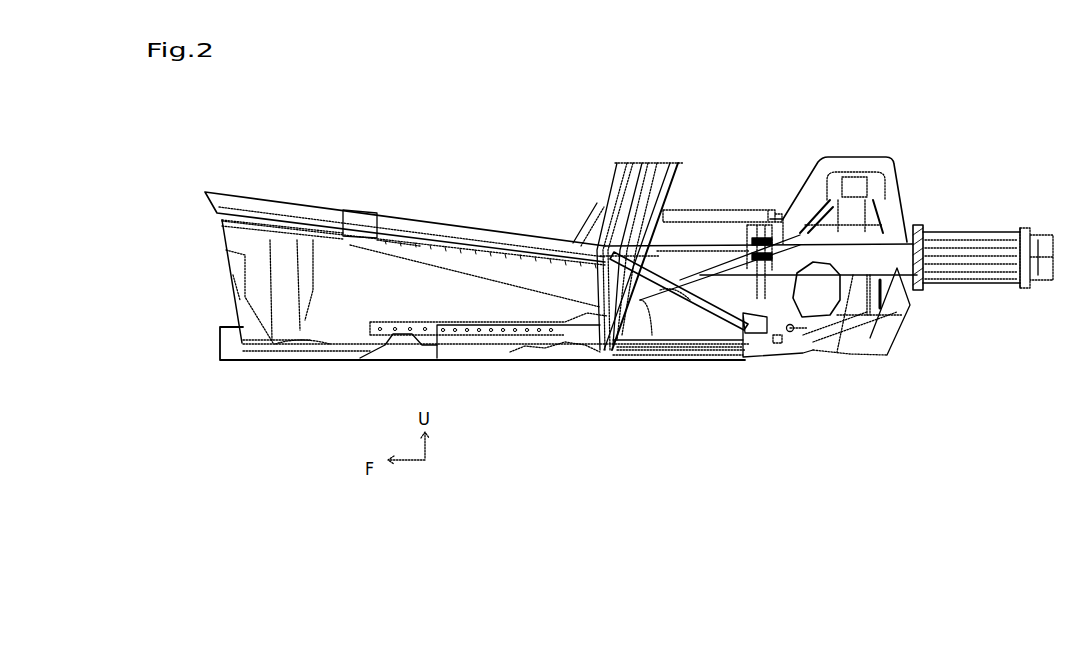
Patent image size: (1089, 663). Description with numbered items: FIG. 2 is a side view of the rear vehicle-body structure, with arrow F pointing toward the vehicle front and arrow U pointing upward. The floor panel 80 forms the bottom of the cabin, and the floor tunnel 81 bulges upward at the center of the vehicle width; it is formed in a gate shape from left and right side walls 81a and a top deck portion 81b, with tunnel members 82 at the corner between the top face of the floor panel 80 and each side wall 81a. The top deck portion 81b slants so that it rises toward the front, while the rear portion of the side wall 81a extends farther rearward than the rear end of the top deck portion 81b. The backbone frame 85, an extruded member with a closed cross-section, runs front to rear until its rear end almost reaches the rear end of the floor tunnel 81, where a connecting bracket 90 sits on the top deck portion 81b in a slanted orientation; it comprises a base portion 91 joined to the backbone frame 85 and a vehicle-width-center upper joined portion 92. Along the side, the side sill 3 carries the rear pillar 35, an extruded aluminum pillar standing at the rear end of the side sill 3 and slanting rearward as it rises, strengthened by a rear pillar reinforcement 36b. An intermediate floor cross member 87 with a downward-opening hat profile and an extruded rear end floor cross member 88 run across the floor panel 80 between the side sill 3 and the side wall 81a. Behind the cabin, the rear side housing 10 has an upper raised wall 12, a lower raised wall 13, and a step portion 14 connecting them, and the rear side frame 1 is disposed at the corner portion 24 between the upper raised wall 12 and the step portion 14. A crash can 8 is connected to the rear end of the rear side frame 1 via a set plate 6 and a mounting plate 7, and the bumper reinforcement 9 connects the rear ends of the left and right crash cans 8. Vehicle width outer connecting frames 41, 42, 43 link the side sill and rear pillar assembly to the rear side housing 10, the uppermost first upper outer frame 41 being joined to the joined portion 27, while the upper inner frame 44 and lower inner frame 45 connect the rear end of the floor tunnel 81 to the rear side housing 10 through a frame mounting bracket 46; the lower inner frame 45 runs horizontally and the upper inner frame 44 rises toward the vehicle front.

The rear side frame 1 is at (885, 352).
The side sill 3 is at (232, 362).
The set plate 6 is at (912, 227).
The mounting plate 7 is at (930, 236).
The crash can 8 is at (955, 234).
The bumper reinforcement 9 is at (1050, 250).
The rear side housing 10 is at (885, 158).
The upper raised wall 12 is at (833, 165).
The lower raised wall 13 is at (853, 348).
The step portion 14 is at (910, 320).
The corner portion 24 is at (798, 222).
The first upper outer frame rear end joined portion 27 is at (758, 224).
The rear pillar 35 is at (683, 185).
The rear pillar reinforcement 36b is at (613, 187).
The first upper outer frame 41 is at (700, 210).
The vehicle width outer connecting frame 42 is at (652, 335).
The vehicle width outer connecting frame 43 is at (700, 360).
The upper inner frame 44 is at (740, 357).
The lower inner frame 45 is at (713, 357).
The frame mounting bracket 46 is at (808, 350).
The floor panel 80 is at (460, 358).
The floor tunnel 81 is at (223, 297).
The side wall 81a is at (232, 275).
The top deck portion 81b is at (367, 230).
The tunnel member 82 is at (318, 343).
The backbone frame 85 is at (413, 221).
The intermediate floor cross member 87 is at (363, 357).
The rear end floor cross member 88 is at (610, 352).
The connecting bracket 90 is at (643, 166).
The base portion 91 is at (607, 222).
The vehicle-width-center upper joined portion 92 is at (668, 170).